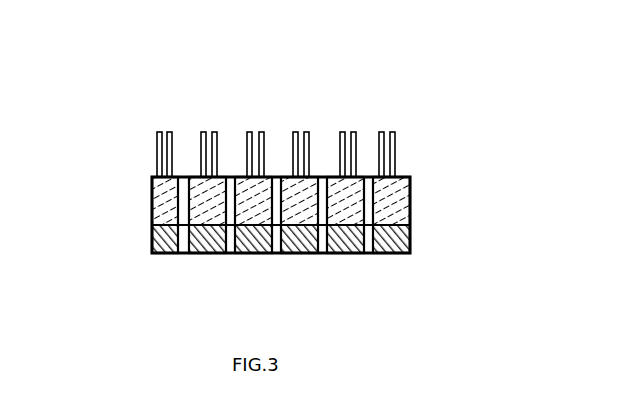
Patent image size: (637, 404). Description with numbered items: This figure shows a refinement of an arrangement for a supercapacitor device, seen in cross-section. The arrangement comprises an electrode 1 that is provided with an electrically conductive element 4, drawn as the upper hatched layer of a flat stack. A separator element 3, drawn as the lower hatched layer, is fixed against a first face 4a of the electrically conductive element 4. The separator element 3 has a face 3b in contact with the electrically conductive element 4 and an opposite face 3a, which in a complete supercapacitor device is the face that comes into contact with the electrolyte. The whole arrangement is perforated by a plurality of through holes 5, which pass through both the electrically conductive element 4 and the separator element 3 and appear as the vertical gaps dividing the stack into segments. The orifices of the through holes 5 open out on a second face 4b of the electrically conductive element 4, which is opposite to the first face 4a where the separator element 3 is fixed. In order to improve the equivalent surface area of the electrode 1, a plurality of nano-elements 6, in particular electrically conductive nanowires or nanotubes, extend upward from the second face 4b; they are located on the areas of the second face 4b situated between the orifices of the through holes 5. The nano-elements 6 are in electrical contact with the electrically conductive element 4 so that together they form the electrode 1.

The electrode 1 is at (140, 197).
The separator element 3 is at (153, 246).
The face of the separator element 3a is at (369, 266).
The face of the separator element 3b is at (203, 204).
The electrically conductive element 4 is at (405, 202).
The first face of the electrically conductive element 4a is at (252, 243).
The second face of the electrically conductive element 4b is at (226, 154).
The through holes 5 is at (280, 178).
The nano-elements 6 is at (155, 137).